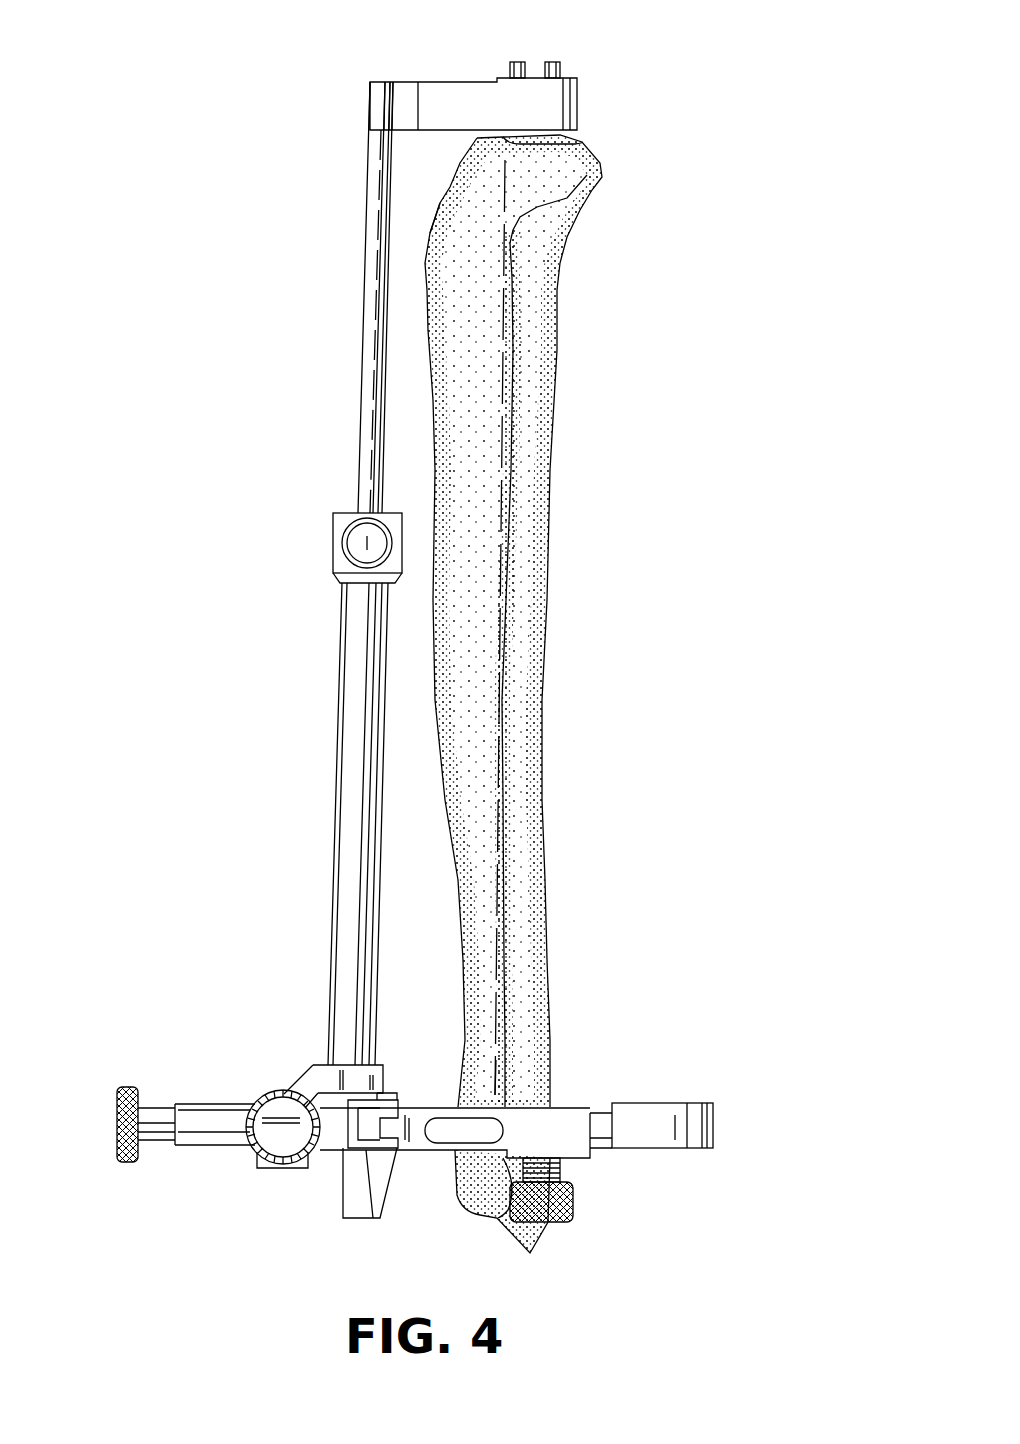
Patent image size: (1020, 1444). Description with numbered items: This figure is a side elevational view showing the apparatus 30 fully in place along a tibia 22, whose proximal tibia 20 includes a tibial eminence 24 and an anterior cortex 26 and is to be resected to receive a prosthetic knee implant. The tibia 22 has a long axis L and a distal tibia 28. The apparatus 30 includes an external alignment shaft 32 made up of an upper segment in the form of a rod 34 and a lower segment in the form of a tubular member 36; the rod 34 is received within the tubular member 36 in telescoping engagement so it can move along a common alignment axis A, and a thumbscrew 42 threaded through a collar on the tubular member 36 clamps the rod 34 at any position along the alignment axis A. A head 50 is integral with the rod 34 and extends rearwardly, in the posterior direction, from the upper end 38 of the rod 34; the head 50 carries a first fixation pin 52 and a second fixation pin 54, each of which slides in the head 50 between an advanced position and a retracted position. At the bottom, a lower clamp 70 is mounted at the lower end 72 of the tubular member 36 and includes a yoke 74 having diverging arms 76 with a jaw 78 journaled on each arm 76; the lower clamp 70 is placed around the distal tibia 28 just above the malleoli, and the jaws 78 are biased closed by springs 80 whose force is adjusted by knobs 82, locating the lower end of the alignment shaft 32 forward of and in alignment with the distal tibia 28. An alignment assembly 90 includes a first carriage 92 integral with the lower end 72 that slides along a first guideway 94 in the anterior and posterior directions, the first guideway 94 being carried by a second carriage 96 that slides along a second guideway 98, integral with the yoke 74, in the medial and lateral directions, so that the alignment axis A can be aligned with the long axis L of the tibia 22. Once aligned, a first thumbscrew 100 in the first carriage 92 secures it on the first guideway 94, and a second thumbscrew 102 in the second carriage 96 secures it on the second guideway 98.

The proximal tibia 20 is at (602, 180).
The tibia 22 is at (488, 353).
The tibial eminence 24 is at (572, 136).
The anterior cortex 26 is at (432, 222).
The distal tibia 28 is at (493, 1093).
The apparatus 30 is at (315, 824).
The external alignment shaft 32 is at (337, 743).
The rod 34 is at (372, 407).
The tubular member 36 is at (365, 902).
The upper end 38 is at (383, 82).
The thumbscrew 42 is at (355, 545).
The head 50 is at (563, 110).
The first fixation pin 52 is at (555, 62).
The second fixation pin 54 is at (517, 62).
The lower clamp 70 is at (593, 1160).
The lower end 72 is at (377, 1063).
The yoke 74 is at (425, 1155).
The arms 76 is at (510, 1147).
The jaw 78 is at (683, 1110).
The springs 80 is at (562, 1170).
The knobs 82 is at (557, 1223).
The alignment assembly 90 is at (300, 1176).
The first carriage 92 is at (288, 1080).
The first guideway 94 is at (197, 1130).
The second carriage 96 is at (353, 1147).
The second guideway 98 is at (367, 1152).
The first thumbscrew 100 is at (272, 1110).
The second thumbscrew 102 is at (127, 1087).
The alignment axis A is at (372, 302).
The long axis L is at (497, 485).